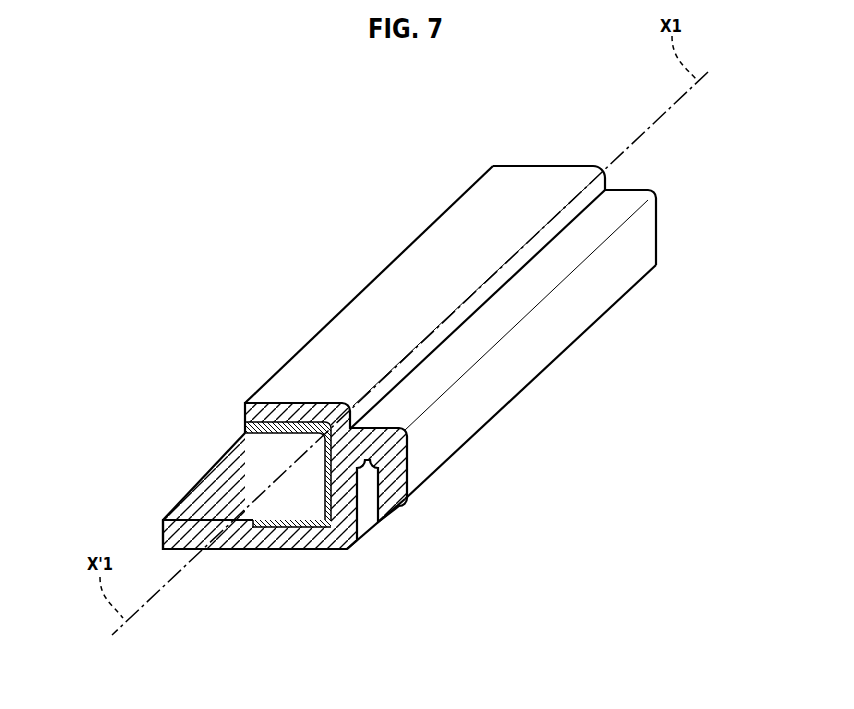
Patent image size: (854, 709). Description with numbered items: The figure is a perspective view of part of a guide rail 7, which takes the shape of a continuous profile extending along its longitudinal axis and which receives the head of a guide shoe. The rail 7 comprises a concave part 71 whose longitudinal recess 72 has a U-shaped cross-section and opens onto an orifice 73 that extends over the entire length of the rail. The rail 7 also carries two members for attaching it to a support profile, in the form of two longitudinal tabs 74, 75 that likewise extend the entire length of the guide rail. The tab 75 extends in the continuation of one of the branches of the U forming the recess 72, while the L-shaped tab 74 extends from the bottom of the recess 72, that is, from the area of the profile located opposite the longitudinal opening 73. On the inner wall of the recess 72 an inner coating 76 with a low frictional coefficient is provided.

The guide rail 7 is at (565, 393).
The concave part 71 is at (385, 523).
The longitudinal recess 72 is at (272, 481).
The orifice 73 is at (212, 455).
The longitudinal tab 74 is at (460, 420).
The longitudinal tab 75 is at (168, 540).
The inner coating 76 is at (284, 527).